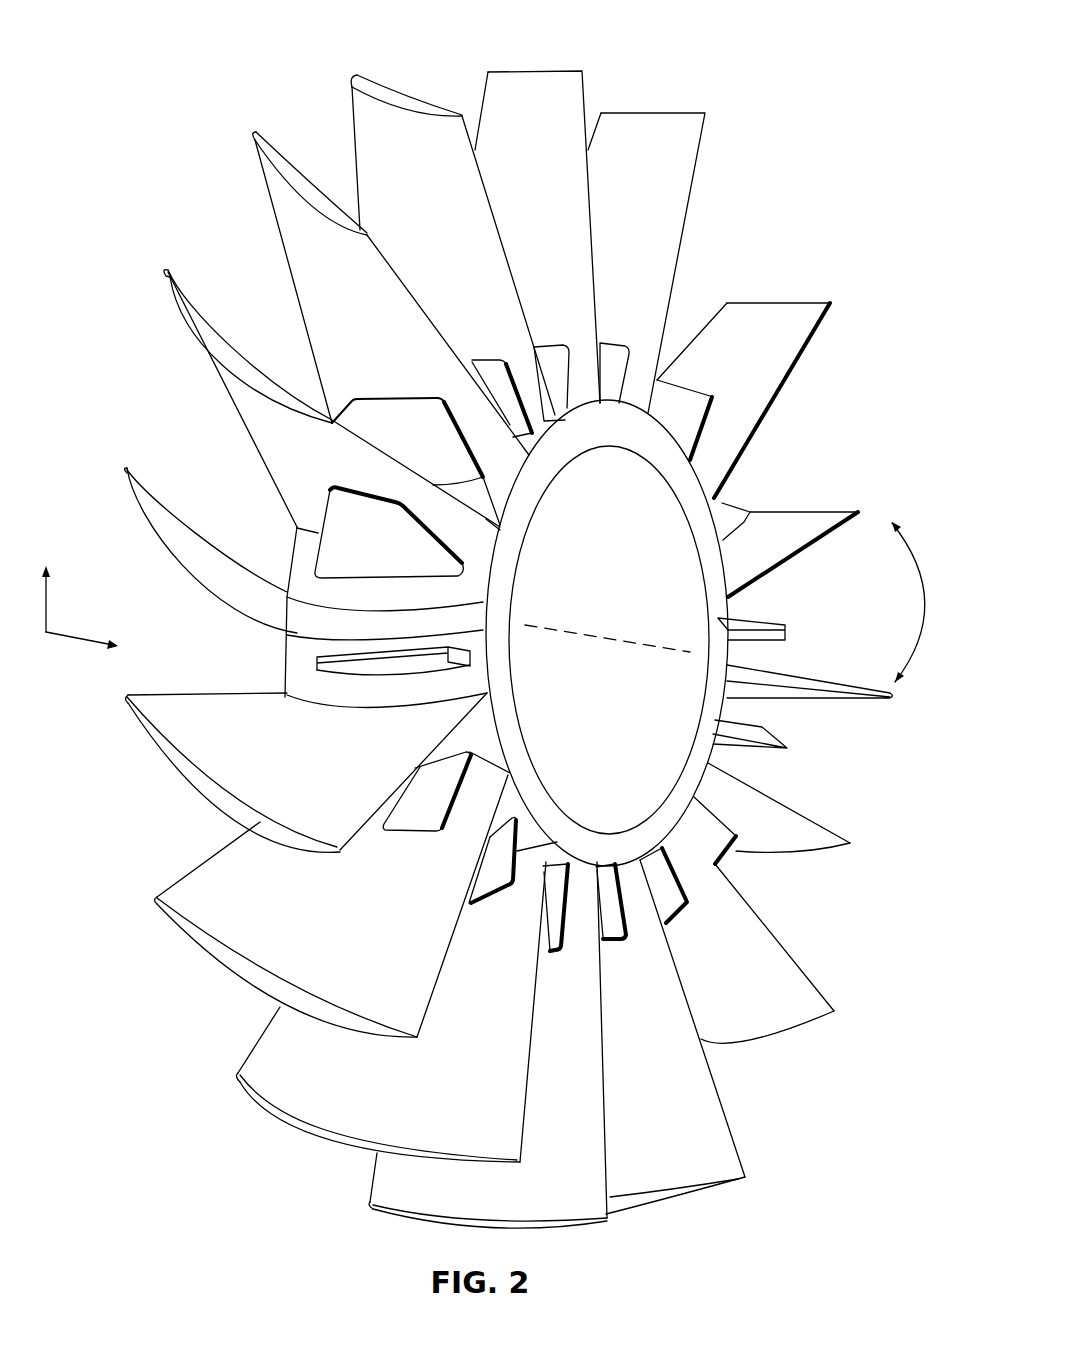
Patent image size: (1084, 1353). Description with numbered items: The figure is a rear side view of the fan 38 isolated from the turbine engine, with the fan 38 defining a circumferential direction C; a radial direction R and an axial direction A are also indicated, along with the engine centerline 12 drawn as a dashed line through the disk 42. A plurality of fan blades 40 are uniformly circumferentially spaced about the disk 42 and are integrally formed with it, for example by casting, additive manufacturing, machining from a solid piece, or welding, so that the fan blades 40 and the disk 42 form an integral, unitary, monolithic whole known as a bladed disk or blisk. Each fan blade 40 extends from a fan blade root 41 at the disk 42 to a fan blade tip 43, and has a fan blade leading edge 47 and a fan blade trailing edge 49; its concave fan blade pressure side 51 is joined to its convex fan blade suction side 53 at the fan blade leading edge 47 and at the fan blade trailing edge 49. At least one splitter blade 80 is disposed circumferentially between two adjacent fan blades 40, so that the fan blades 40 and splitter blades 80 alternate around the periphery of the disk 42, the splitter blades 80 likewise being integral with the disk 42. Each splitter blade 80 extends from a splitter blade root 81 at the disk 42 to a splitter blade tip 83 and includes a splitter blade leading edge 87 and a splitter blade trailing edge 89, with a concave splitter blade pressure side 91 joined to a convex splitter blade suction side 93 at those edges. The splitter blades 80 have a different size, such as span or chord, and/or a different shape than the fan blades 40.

The fan 38 is at (780, 41).
The fan blade 40 is at (250, 403).
The fan blade root 41 is at (500, 530).
The disk 42 is at (727, 613).
The fan blade tip 43 is at (200, 326).
The fan blade leading edge 47 is at (170, 272).
The fan blade trailing edge 49 is at (332, 423).
The fan blade pressure side 51 is at (256, 356).
The fan blade suction side 53 is at (240, 443).
The splitter blade 80 is at (338, 528).
The splitter blade root 81 is at (432, 567).
The splitter blade tip 83 is at (371, 492).
The splitter blade leading edge 87 is at (310, 557).
The splitter blade trailing edge 89 is at (450, 550).
The splitter blade pressure side 91 is at (386, 650).
The splitter blade suction side 93 is at (389, 690).
The engine central axis 12 is at (626, 640).
The circumferential direction C is at (928, 603).
The radial direction R is at (54, 584).
The axial direction A is at (93, 648).